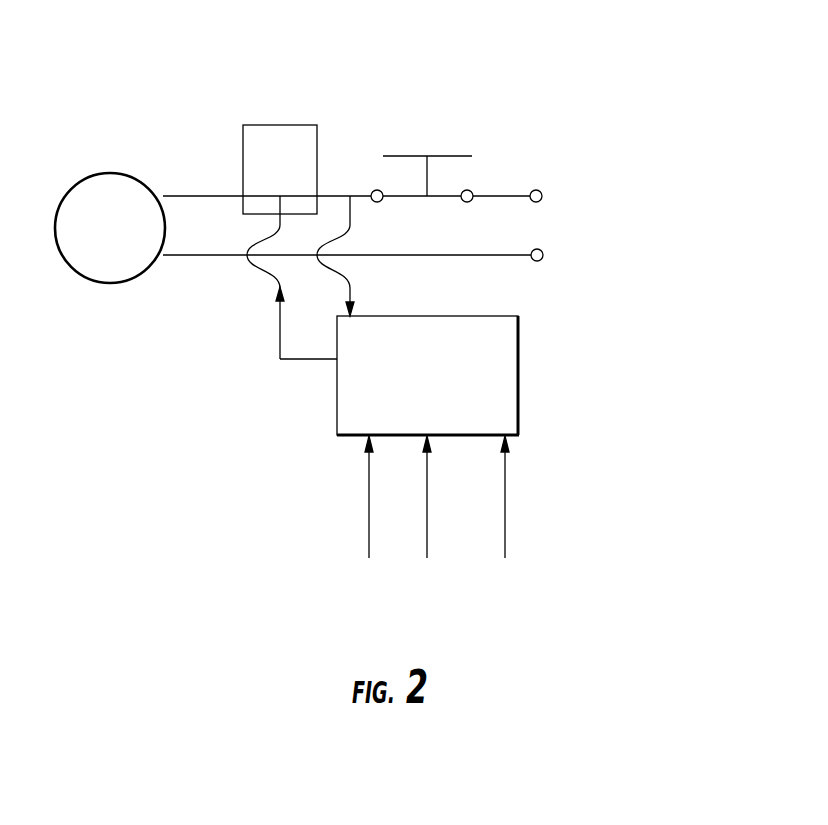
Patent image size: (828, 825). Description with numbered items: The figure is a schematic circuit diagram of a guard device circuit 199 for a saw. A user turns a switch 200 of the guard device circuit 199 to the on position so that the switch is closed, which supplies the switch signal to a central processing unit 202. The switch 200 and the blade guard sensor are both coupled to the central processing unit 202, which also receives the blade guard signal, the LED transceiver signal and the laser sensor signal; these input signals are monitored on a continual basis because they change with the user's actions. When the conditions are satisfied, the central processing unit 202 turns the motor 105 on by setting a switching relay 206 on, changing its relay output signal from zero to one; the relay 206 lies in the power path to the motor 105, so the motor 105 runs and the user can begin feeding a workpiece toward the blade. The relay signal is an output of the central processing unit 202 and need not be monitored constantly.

The guard device circuit 199 is at (652, 96).
The motor 105 is at (134, 179).
The switching relay 206 is at (288, 132).
The switch 200 is at (451, 156).
The CPU 202 is at (518, 350).